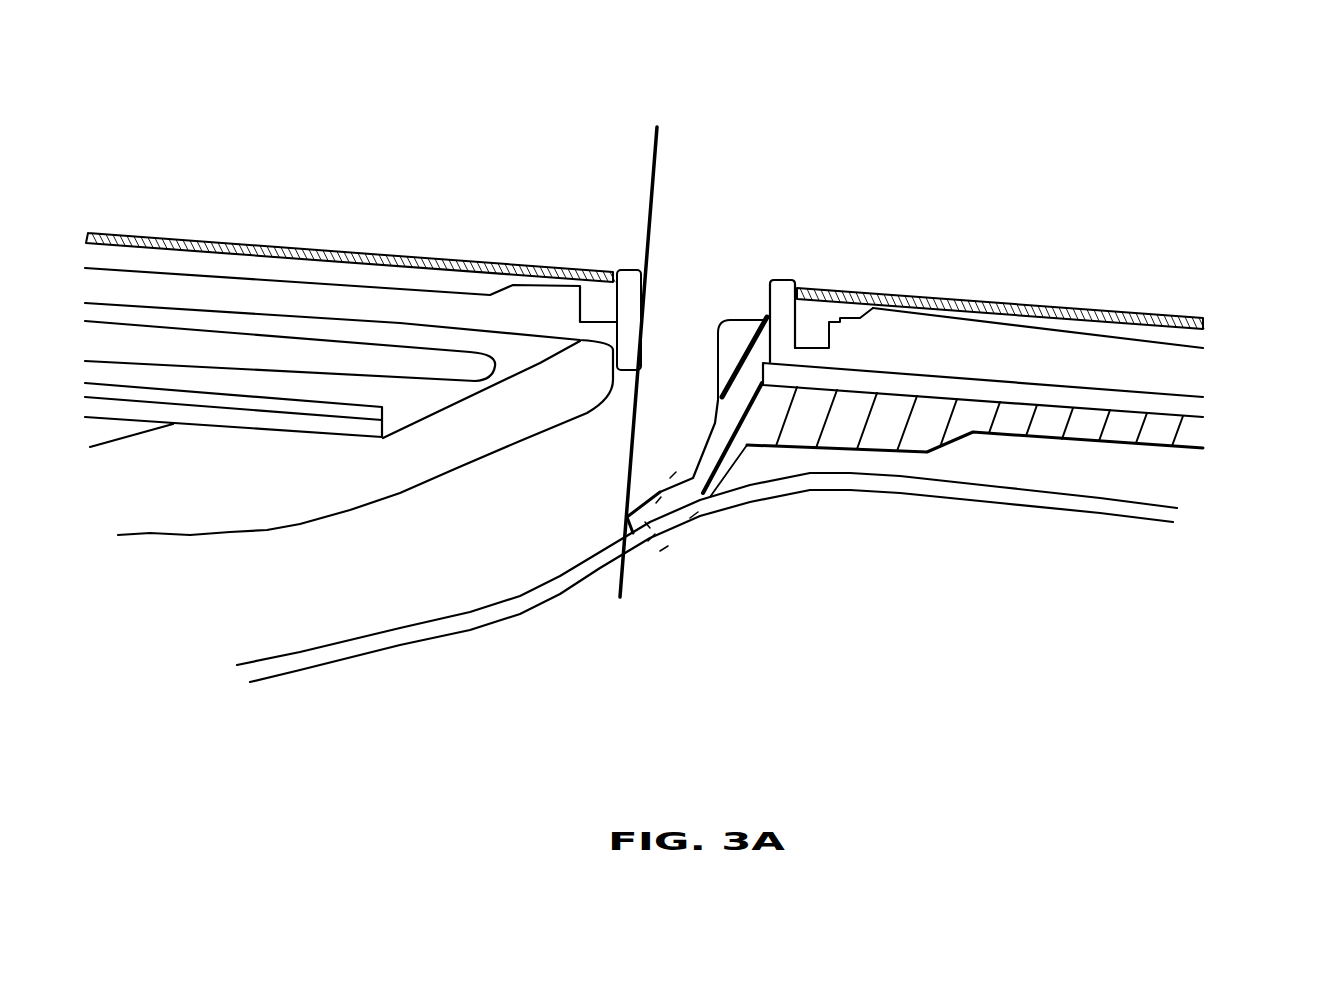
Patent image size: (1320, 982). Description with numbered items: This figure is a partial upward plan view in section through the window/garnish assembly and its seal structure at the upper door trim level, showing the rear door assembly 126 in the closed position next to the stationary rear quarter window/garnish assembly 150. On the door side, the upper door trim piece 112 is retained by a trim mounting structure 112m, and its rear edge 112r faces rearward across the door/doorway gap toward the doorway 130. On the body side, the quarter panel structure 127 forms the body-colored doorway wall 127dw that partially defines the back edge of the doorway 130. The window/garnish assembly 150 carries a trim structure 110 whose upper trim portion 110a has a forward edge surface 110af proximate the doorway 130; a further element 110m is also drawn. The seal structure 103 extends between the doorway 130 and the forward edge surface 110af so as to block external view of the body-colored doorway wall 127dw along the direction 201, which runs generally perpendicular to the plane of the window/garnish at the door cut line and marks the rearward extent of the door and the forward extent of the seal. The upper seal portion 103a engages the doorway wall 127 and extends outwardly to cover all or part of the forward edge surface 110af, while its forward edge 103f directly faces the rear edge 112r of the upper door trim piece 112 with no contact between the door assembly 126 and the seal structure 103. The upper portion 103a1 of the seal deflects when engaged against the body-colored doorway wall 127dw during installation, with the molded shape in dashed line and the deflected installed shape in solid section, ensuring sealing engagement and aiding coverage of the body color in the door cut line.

The rear door assembly 126 is at (283, 118).
The stationary rear quarter window/garnish assembly 150 is at (1118, 195).
The direction 201 is at (648, 157).
The upper door trim piece 112 is at (365, 256).
The trim mounting structure 112m is at (92, 289).
The rear edge of upper door trim piece 112r is at (645, 329).
The trim structure 110 is at (1205, 304).
The upper trim portion 110a is at (962, 302).
The forward edge surface of upper trim portion 110af is at (770, 296).
The aft panel member 110m is at (1198, 371).
The seal structure 103 is at (1195, 438).
The forward edge of seal 103f is at (717, 385).
The upper seal portion 103a is at (715, 437).
The upper deflecting portion of seal 103a1 is at (660, 492).
The quarter panel structure 127 is at (1175, 524).
The body-colored doorway wall 127dw is at (618, 545).
The doorway 130 is at (485, 545).